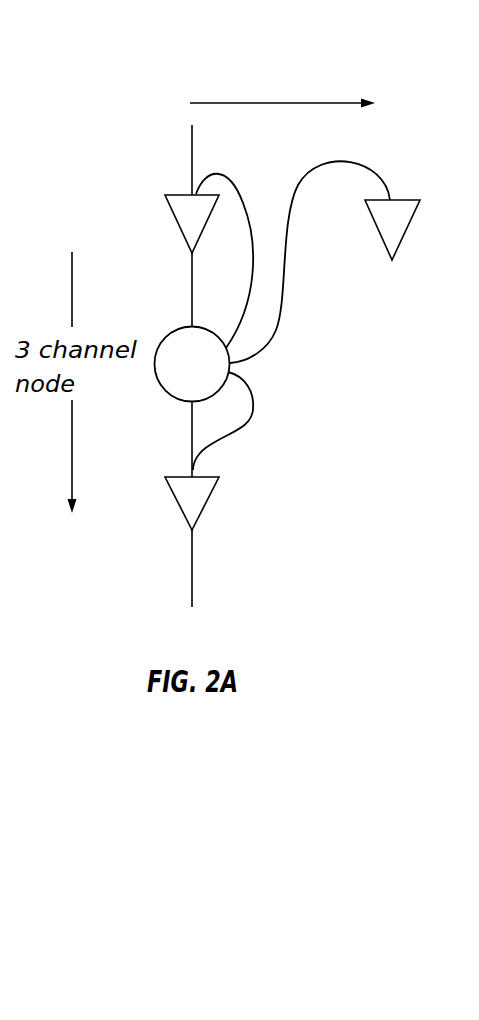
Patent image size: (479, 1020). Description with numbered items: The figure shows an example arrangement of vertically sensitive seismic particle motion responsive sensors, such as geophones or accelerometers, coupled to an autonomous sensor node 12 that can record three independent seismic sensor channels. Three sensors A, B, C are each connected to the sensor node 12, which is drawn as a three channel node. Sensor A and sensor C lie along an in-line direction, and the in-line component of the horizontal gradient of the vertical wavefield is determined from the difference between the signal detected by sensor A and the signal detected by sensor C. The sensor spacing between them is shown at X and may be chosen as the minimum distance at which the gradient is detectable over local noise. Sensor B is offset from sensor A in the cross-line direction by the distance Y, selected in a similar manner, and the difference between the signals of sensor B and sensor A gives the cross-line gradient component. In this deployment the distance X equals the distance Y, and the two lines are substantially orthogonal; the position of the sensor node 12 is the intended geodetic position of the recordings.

The sensor node 12 is at (306, 355).
The seismic sensor A is at (181, 224).
The seismic sensor B is at (382, 230).
The seismic sensor C is at (182, 506).
The in-line sensor spacing X is at (69, 405).
The cross-line distance Y is at (268, 104).